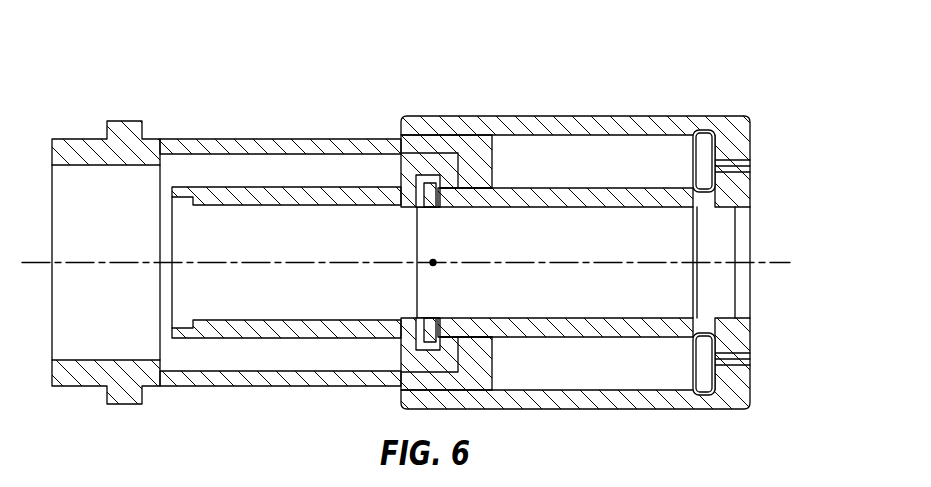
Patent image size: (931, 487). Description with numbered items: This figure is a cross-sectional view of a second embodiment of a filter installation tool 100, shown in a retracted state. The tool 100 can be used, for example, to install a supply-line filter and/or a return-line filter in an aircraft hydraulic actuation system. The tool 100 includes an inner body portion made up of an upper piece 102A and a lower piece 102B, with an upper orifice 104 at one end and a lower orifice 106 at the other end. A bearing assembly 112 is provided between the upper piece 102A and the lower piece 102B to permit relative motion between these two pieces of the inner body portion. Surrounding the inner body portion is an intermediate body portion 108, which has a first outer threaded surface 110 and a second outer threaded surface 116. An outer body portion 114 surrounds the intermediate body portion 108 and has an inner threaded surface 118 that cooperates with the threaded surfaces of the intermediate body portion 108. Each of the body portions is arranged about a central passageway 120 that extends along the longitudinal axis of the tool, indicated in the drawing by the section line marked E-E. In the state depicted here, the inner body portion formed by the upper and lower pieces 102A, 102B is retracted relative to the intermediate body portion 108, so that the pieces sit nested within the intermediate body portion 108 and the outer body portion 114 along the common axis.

The filter installation tool 100 is at (412, 58).
The upper piece 102A is at (252, 186).
The lower piece 102B is at (545, 190).
The upper orifice 104 is at (164, 244).
The lower orifice 106 is at (757, 285).
The intermediate body portion 108 is at (240, 137).
The first outer threaded surface 110 is at (434, 133).
The bearing assembly 112 is at (470, 143).
The outer body portion 114 is at (580, 113).
The second outer threaded surface 116 is at (88, 137).
The inner threaded surface 118 is at (613, 140).
The central passageway 120 is at (329, 243).